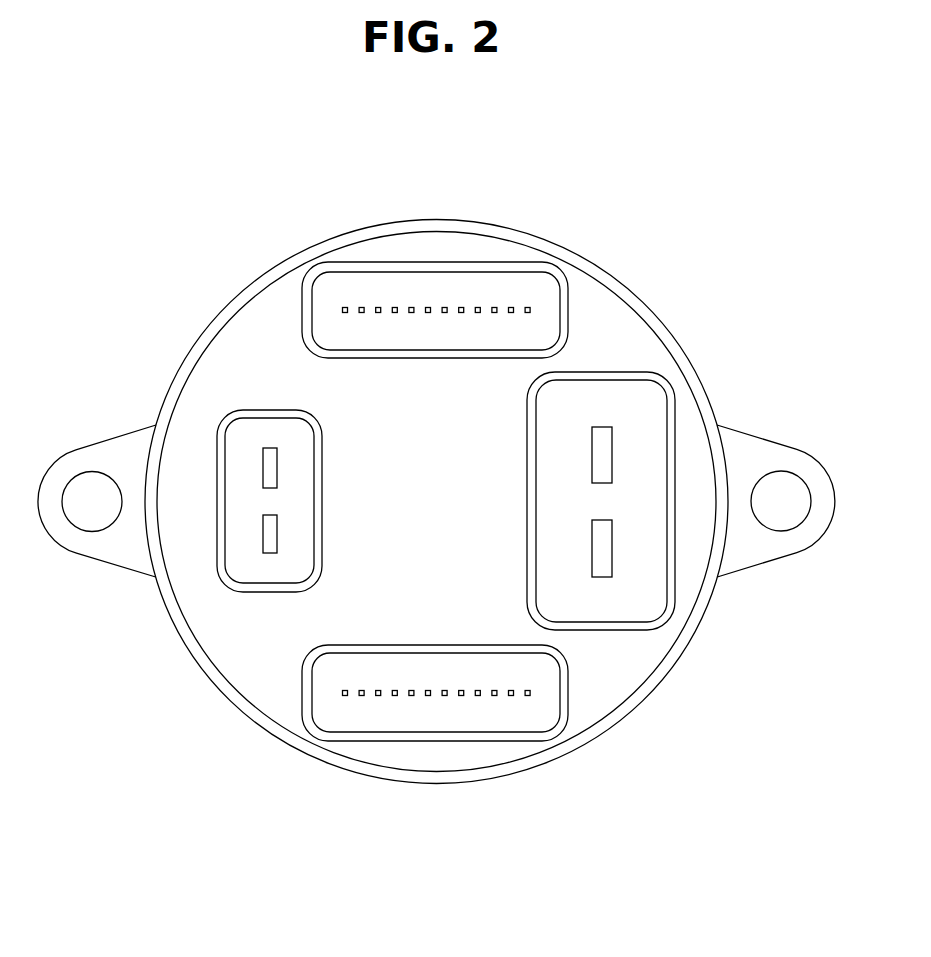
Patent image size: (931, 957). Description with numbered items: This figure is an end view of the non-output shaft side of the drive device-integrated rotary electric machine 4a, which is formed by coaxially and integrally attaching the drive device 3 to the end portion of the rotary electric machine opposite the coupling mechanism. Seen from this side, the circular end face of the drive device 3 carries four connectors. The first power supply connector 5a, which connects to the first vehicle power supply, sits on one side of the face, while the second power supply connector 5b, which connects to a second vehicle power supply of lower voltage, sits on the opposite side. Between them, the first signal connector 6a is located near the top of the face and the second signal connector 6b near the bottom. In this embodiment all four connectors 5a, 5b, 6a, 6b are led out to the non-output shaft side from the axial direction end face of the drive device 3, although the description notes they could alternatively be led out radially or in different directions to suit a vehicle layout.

The drive device 3 is at (640, 662).
The drive device-integrated rotary electric machine 4a is at (328, 836).
The first power supply connector 5a is at (223, 422).
The second power supply connector 5b is at (673, 403).
The first signal connector 6a is at (440, 262).
The second signal connector 6b is at (510, 740).